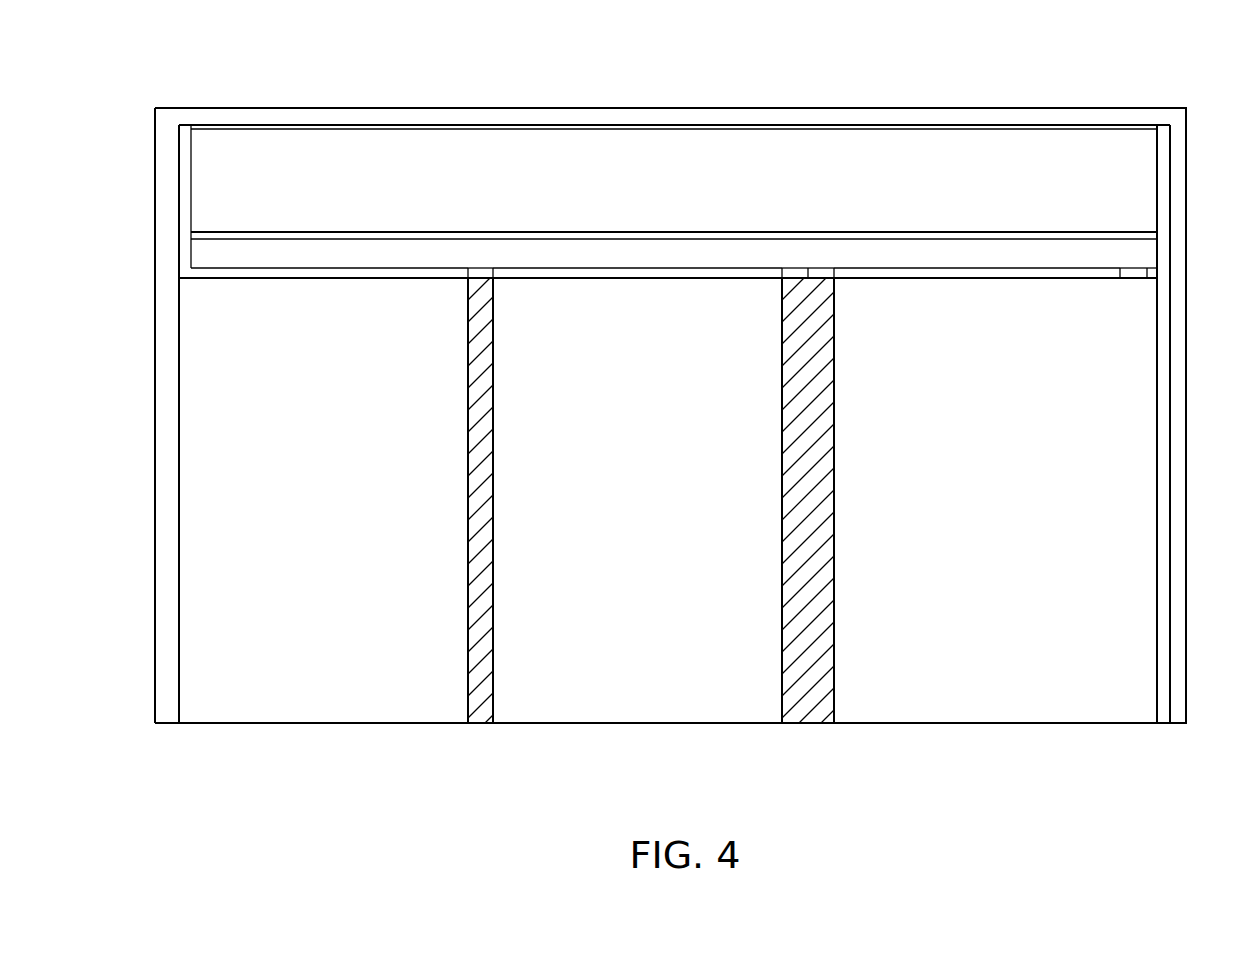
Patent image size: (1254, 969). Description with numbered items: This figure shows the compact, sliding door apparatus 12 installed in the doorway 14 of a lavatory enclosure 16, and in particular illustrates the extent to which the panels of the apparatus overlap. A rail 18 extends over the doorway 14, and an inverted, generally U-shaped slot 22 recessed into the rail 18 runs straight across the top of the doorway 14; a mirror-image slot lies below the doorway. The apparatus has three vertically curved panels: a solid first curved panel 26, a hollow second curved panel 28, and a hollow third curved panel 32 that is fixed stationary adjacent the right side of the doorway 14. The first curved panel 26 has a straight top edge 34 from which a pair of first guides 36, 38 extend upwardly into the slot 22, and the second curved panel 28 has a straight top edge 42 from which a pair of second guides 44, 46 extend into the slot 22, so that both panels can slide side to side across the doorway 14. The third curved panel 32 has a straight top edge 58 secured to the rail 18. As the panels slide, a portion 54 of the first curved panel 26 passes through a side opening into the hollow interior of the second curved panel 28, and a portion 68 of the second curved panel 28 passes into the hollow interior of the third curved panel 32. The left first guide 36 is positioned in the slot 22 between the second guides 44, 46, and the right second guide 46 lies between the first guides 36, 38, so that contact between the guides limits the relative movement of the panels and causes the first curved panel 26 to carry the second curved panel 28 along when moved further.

The compact, sliding door apparatus 12 is at (1120, 86).
The doorway 14 is at (1166, 380).
The lavatory enclosure 16 is at (155, 305).
The rail 18 is at (418, 150).
The slot 22 is at (1018, 267).
The first curved panel 26 is at (1136, 560).
The second curved panel 28 is at (678, 683).
The third curved panel 32 is at (279, 718).
The top edge 34 is at (944, 278).
The first guide 36 is at (793, 272).
The first guide 38 is at (1137, 272).
The top edge 42 is at (655, 278).
The second guide 44 is at (483, 272).
The second guide 46 is at (822, 272).
The portion of the first curved panel 54 is at (797, 378).
The top edge 58 is at (313, 276).
The portion of the second curved panel 68 is at (480, 398).